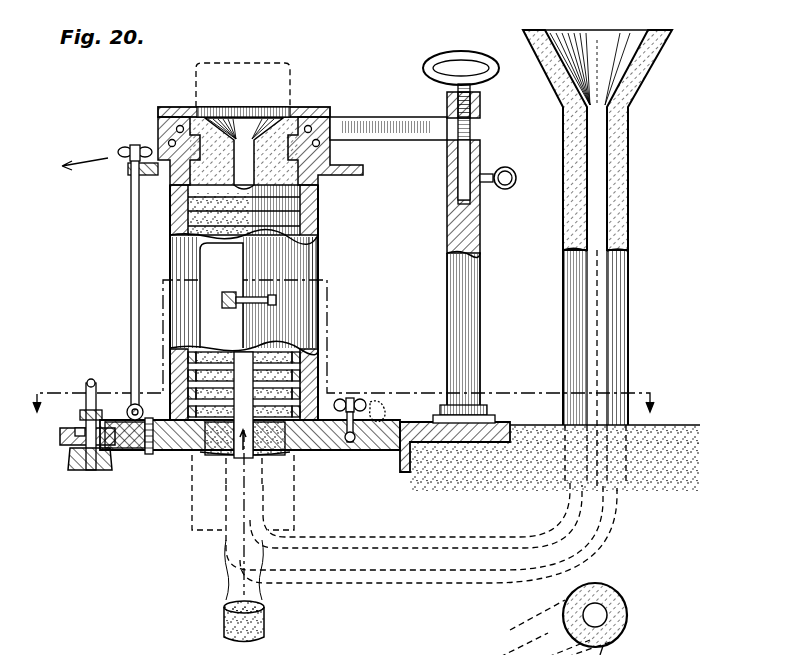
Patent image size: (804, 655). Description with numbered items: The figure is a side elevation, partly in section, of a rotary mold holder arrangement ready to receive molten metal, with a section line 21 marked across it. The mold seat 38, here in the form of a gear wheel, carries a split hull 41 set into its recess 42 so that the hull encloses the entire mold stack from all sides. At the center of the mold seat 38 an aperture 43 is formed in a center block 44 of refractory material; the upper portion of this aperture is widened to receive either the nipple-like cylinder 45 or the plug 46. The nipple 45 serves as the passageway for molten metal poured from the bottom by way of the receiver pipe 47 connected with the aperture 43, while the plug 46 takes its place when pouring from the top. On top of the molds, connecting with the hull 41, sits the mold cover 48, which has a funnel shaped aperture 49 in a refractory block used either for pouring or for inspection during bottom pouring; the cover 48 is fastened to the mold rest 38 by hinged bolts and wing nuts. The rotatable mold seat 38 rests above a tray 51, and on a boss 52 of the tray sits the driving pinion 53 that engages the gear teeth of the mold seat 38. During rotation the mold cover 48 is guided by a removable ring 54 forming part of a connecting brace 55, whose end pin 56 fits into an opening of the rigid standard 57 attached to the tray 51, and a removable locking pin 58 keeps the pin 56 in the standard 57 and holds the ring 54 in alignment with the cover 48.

The section line 21 is at (357, 346).
The mold seat 38 is at (347, 443).
The split hull 41 is at (318, 212).
The recess 42 is at (180, 453).
The aperture 43 is at (262, 460).
The center block 44 is at (218, 462).
The nipple-like cylinder 45 is at (293, 462).
The plug 46 is at (265, 622).
The receiver pipe 47 is at (617, 293).
The mold cover 48 is at (166, 152).
The funnel shaped aperture 49 is at (262, 125).
The tray 51 is at (463, 440).
The boss 52 is at (72, 466).
The driving pinion 53 is at (62, 434).
The removable ring 54 is at (160, 127).
The connecting brace 55 is at (365, 120).
The pin 56 is at (463, 150).
The rigid standard 57 is at (458, 303).
The removable locking pin 58 is at (508, 189).